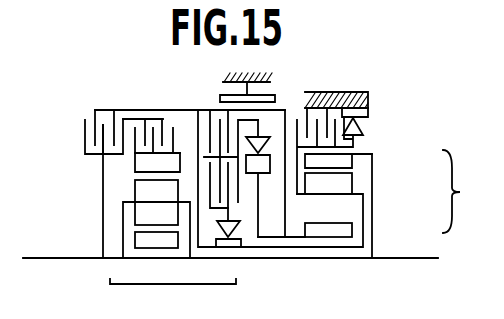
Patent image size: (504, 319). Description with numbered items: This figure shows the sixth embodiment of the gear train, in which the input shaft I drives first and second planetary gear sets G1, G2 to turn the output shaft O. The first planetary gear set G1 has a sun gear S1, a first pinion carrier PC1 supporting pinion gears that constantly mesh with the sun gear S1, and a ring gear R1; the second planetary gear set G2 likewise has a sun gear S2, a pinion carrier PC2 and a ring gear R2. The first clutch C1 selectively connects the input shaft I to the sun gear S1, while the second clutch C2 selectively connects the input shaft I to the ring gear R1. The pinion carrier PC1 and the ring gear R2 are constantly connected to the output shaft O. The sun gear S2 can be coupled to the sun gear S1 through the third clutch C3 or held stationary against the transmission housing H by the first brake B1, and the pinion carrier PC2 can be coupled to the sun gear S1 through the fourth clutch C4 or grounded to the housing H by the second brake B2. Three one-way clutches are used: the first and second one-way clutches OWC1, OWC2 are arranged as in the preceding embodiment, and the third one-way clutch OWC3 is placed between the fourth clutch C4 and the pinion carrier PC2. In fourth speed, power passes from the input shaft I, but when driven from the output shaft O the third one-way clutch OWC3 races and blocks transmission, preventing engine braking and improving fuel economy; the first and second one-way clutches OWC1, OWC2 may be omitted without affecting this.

The first clutch C1 is at (94, 109).
The second clutch C2 is at (147, 127).
The third clutch C3 is at (200, 109).
The fourth clutch C4 is at (232, 205).
The first brake B1 is at (275, 95).
The second brake B2 is at (299, 118).
The transmission housing H is at (352, 102).
The first one-way clutch OWC1 is at (364, 131).
The second one-way clutch OWC2 is at (265, 168).
The third one-way clutch OWC3 is at (234, 248).
The first planetary gear set G1 is at (173, 295).
The sun gear S1 is at (142, 246).
The first pinion carrier PC1 is at (160, 196).
The ring gear R1 is at (170, 168).
The second planetary gear set G2 is at (470, 191).
The sun gear S2 is at (348, 232).
The pinion carrier PC2 is at (340, 194).
The ring gear R2 is at (357, 163).
The input shaft I is at (45, 258).
The output shaft O is at (427, 258).